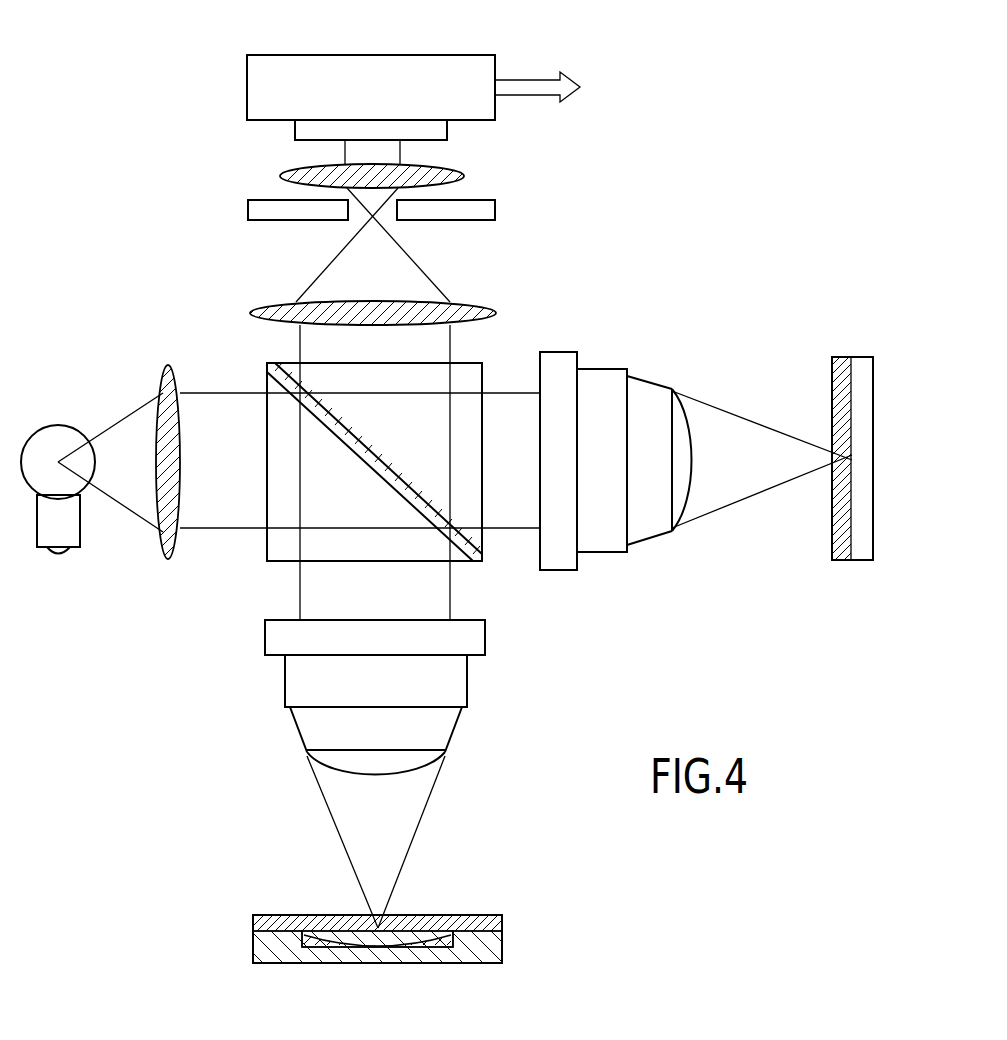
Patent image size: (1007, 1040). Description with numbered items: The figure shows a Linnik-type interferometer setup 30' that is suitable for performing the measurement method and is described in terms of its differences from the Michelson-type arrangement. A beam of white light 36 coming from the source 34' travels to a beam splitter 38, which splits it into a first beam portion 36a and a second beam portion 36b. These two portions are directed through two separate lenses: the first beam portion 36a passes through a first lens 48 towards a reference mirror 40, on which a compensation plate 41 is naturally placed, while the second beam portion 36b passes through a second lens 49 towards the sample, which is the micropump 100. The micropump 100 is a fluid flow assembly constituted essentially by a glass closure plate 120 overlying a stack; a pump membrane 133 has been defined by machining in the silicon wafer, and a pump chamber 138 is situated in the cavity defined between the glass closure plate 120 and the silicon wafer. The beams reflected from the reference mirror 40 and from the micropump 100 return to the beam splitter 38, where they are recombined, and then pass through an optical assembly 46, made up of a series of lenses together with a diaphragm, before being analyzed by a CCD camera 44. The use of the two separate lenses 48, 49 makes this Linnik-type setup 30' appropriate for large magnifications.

The setup 30' is at (105, 244).
The CCD camera 44 is at (285, 85).
The optical assembly 46 is at (515, 157).
The source 34' is at (92, 466).
The beam of white light 36 is at (218, 418).
The first beam portion 36a is at (437, 602).
The second beam portion 36b is at (508, 420).
The beam splitter 38 is at (385, 455).
The first lens 48 is at (608, 385).
The reference mirror 40 is at (863, 548).
The compensation plate 41 is at (843, 372).
The second lens 49 is at (447, 687).
The micropump 100 is at (518, 955).
The glass closure plate 120 is at (500, 918).
The pump membrane 133 is at (360, 948).
The pump chamber 138 is at (440, 963).